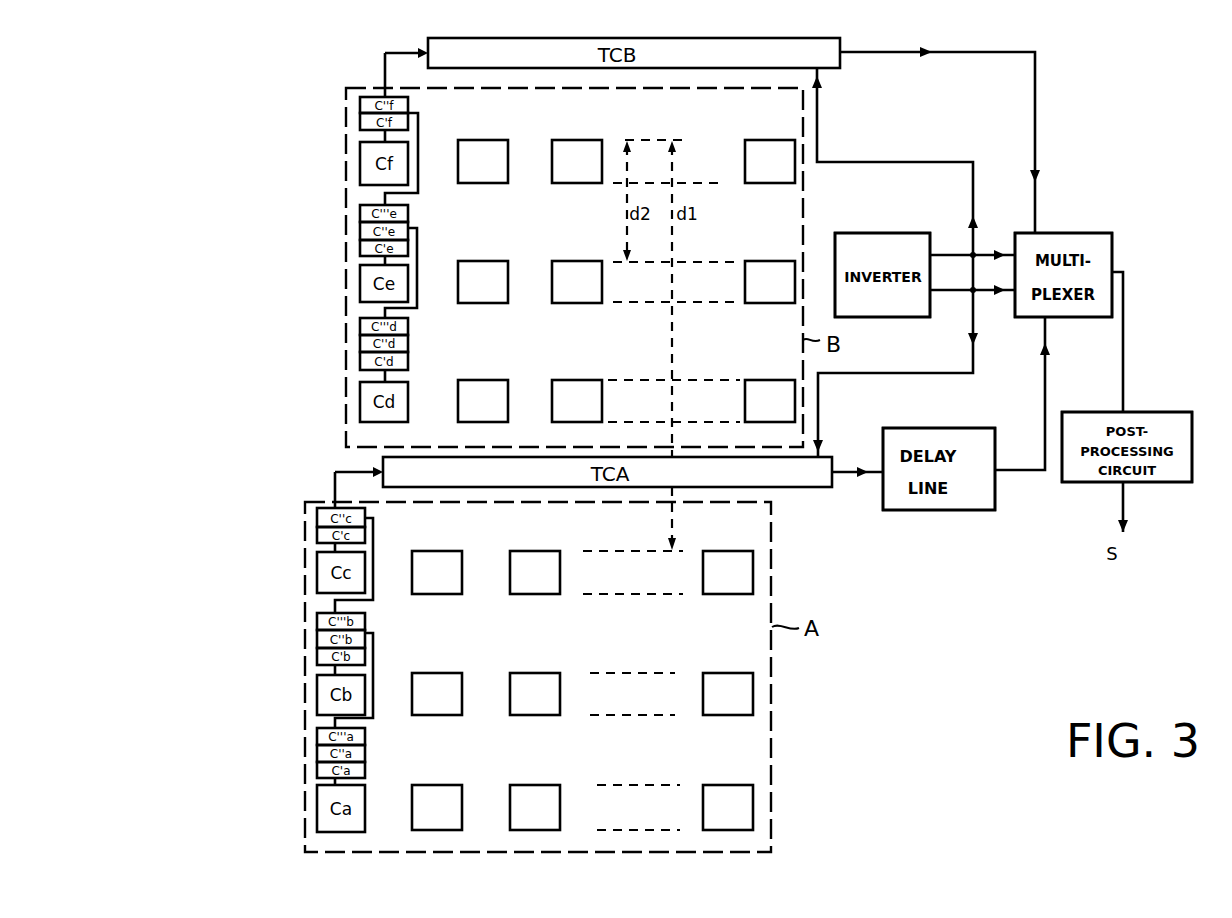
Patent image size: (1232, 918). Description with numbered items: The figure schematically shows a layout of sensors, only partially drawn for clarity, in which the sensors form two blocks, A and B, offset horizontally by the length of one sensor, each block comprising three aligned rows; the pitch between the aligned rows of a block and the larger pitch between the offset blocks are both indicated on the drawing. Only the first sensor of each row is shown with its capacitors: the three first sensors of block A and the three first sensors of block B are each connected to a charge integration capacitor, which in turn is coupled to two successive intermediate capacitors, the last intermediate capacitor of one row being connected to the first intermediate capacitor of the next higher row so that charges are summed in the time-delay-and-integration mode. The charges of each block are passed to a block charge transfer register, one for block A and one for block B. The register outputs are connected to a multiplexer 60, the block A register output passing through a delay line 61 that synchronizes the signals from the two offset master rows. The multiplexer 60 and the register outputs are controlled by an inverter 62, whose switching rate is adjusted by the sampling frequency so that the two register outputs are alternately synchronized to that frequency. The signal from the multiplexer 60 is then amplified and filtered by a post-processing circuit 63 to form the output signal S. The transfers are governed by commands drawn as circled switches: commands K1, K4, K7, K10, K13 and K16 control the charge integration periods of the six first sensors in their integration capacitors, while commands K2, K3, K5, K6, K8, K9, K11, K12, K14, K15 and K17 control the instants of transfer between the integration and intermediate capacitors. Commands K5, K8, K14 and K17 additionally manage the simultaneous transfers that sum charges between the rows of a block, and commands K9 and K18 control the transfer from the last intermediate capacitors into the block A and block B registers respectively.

The multiplexer 60 is at (1068, 233).
The delay line 61 is at (924, 428).
The inverter 62 is at (894, 233).
The post-processing circuit 63 is at (1064, 483).
The command K1 is at (317, 777).
The command K2 is at (317, 760).
The command K3 is at (317, 742).
The command K4 is at (317, 661).
The command K5 is at (317, 642).
The command K6 is at (317, 623).
The command K7 is at (317, 542).
The command K8 is at (317, 525).
The command K9 is at (317, 508).
The command K10 is at (360, 371).
The command K11 is at (360, 352).
The command K12 is at (360, 332).
The command K13 is at (360, 255).
The command K14 is at (360, 237).
The command K15 is at (360, 218).
The command K16 is at (360, 130).
The command K17 is at (360, 115).
The command K18 is at (360, 101).